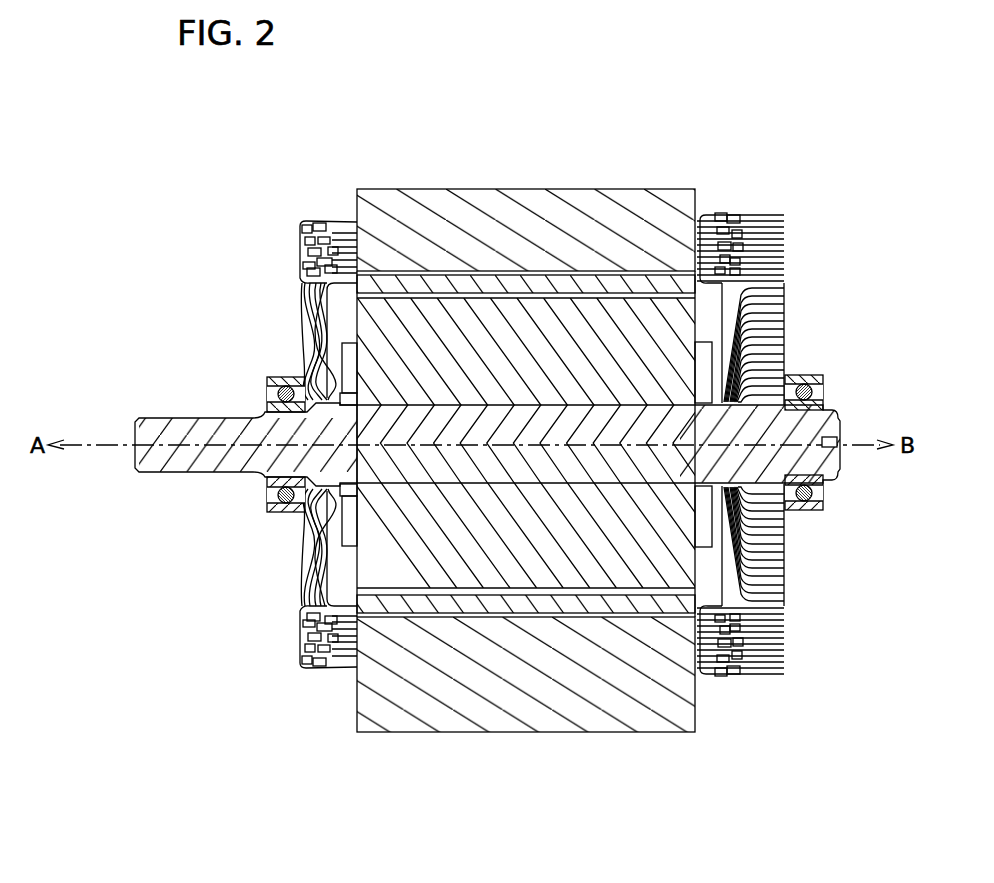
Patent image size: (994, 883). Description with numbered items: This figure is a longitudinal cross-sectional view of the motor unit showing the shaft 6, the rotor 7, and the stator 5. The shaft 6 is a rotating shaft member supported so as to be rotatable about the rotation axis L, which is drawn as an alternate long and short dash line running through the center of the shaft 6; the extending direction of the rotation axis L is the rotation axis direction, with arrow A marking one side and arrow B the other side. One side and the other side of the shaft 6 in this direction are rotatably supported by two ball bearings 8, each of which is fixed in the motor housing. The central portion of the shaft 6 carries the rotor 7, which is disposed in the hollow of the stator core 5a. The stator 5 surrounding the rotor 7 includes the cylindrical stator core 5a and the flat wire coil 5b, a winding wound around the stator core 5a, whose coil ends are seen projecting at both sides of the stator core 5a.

The stator 5 is at (178, 700).
The stator core 5a is at (355, 712).
The flat wire coil 5b is at (305, 660).
The shaft 6 is at (173, 473).
The rotor 7 is at (303, 556).
The ball bearing 8 is at (267, 386).
The rotation axis L is at (77, 443).